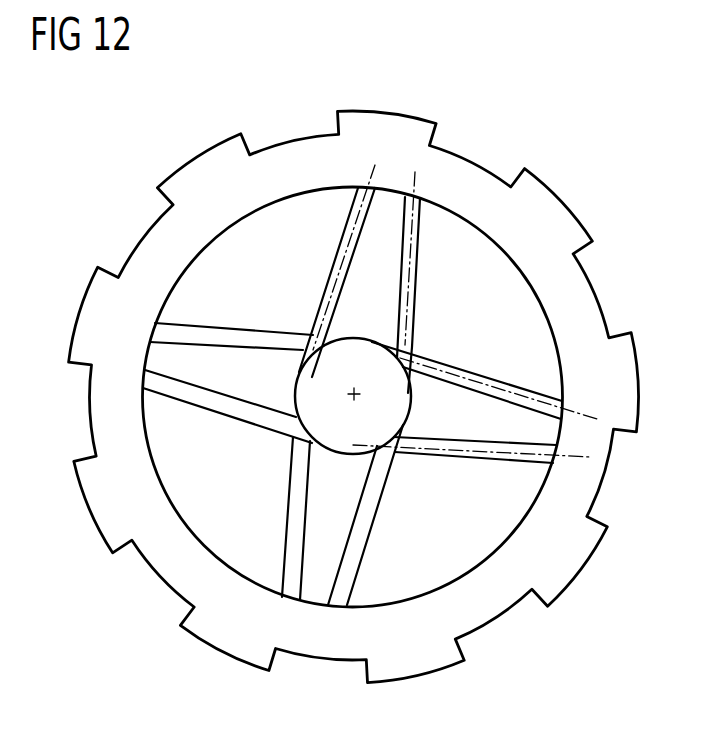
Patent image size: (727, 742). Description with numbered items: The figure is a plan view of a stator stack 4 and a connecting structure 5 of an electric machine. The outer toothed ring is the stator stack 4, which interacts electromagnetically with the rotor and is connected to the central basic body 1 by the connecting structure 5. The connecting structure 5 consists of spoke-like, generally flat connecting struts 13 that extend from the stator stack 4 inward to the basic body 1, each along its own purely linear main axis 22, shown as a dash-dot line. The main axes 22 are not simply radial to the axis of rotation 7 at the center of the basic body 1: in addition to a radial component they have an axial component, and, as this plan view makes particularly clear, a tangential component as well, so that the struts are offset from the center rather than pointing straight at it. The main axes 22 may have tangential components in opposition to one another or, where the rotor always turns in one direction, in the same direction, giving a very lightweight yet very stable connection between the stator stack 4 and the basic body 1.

The stator stack 4 is at (566, 139).
The connecting structure 5 is at (234, 276).
The basic body 1 is at (315, 388).
The axis of rotation 7 is at (352, 397).
The connecting struts 13 is at (194, 325).
The main axis 22 is at (345, 247).